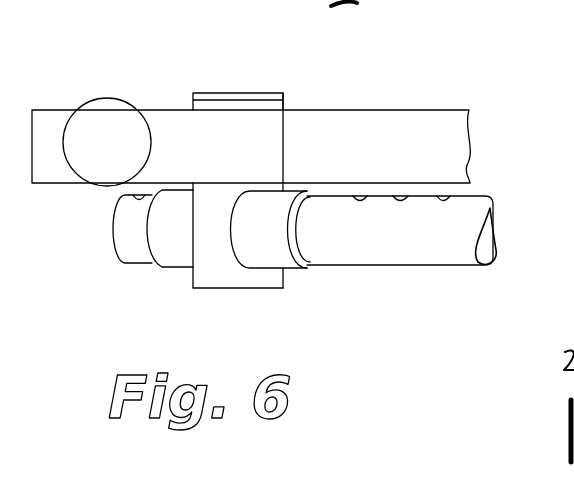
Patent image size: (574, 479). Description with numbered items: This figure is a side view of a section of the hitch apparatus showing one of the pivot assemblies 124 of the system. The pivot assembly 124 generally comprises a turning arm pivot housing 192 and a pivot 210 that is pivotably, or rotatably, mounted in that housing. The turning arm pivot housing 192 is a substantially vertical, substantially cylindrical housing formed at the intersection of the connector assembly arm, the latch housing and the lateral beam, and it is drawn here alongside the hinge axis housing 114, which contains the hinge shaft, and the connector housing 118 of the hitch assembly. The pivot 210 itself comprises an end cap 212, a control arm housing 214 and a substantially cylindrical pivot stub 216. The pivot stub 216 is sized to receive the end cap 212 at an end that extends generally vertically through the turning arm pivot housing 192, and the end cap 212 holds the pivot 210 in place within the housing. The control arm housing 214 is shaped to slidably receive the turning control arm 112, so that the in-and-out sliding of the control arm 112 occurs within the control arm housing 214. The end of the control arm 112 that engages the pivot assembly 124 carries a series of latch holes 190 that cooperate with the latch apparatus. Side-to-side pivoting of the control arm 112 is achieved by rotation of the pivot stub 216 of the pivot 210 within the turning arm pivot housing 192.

The turning control arm 112 is at (405, 250).
The hinge axis housing 114 is at (97, 99).
The connector housing 118 is at (400, 122).
The pivot assembly 124 is at (280, 80).
The latch hole 190 is at (128, 200).
The turning arm pivot housing 192 is at (272, 130).
The pivot 210 is at (230, 288).
The end cap 212 is at (218, 93).
The control arm housing 214 is at (170, 262).
The pivot stub 216 is at (270, 282).